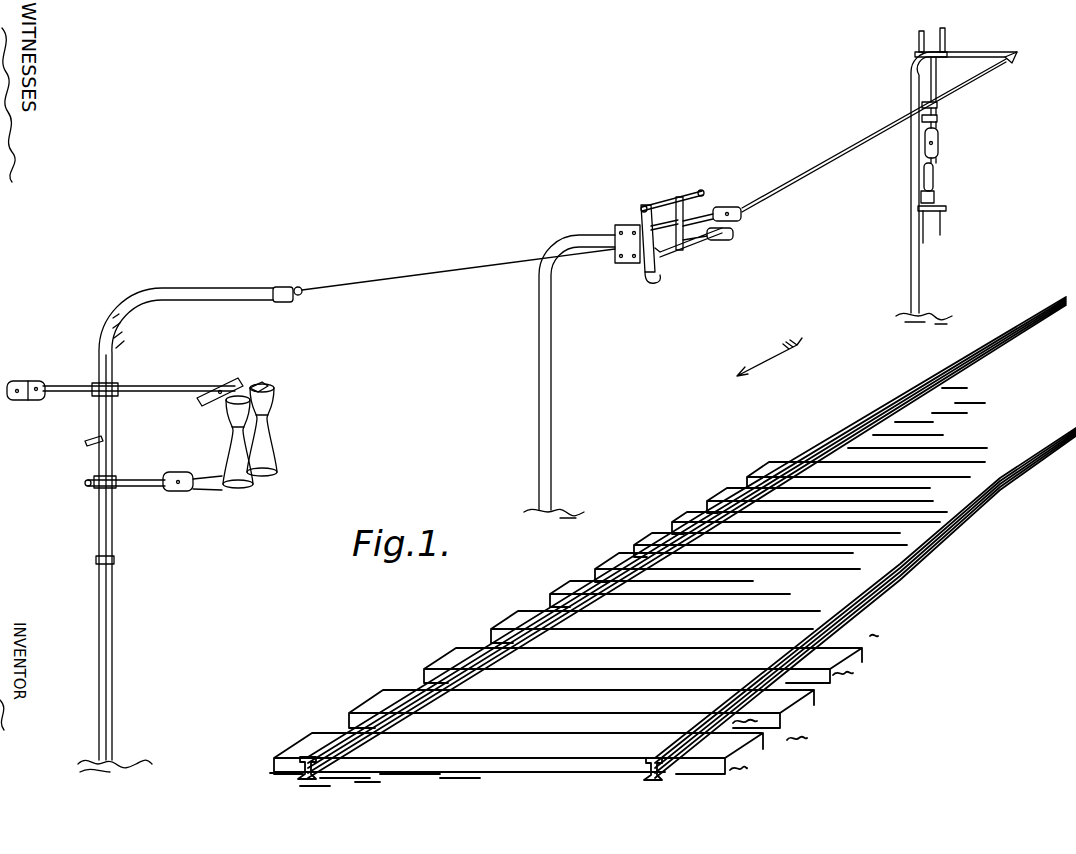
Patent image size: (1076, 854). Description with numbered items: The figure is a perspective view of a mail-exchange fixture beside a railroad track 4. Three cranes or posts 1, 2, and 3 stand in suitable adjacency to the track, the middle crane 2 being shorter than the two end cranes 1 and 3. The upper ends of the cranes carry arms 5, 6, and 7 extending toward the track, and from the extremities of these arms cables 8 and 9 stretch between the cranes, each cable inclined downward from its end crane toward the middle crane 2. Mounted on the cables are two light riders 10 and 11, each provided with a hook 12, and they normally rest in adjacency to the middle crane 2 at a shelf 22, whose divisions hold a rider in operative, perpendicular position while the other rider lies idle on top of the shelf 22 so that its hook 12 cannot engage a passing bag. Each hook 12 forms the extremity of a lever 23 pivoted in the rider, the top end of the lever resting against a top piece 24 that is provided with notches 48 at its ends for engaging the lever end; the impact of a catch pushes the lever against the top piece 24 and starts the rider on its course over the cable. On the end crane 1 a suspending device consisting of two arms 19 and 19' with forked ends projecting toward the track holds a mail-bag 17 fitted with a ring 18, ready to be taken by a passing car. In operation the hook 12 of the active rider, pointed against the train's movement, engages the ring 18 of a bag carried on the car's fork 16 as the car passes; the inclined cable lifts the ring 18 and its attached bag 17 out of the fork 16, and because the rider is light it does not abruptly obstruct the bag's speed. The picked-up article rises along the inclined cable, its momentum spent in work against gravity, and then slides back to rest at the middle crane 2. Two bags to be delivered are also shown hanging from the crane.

The crane 1 is at (114, 614).
The middle crane 2 is at (553, 440).
The crane 3 is at (920, 263).
The railroad track 4 is at (918, 572).
The arm 5 is at (252, 298).
The arm 6 is at (598, 240).
The arm 7 is at (975, 58).
The cable 8 is at (421, 273).
The cable 9 is at (838, 158).
The rider 10 is at (630, 265).
The rider 11 is at (746, 217).
The hook 12 is at (738, 236).
The fork 16 is at (268, 383).
The mail-bag 17 is at (236, 458).
The ring 18 is at (238, 385).
The arm 19 is at (494, 274).
The arm 19' is at (945, 203).
The shelf 22 is at (706, 250).
The lever 23 is at (706, 213).
The top piece 24 is at (660, 203).
The notches 48 is at (648, 207).